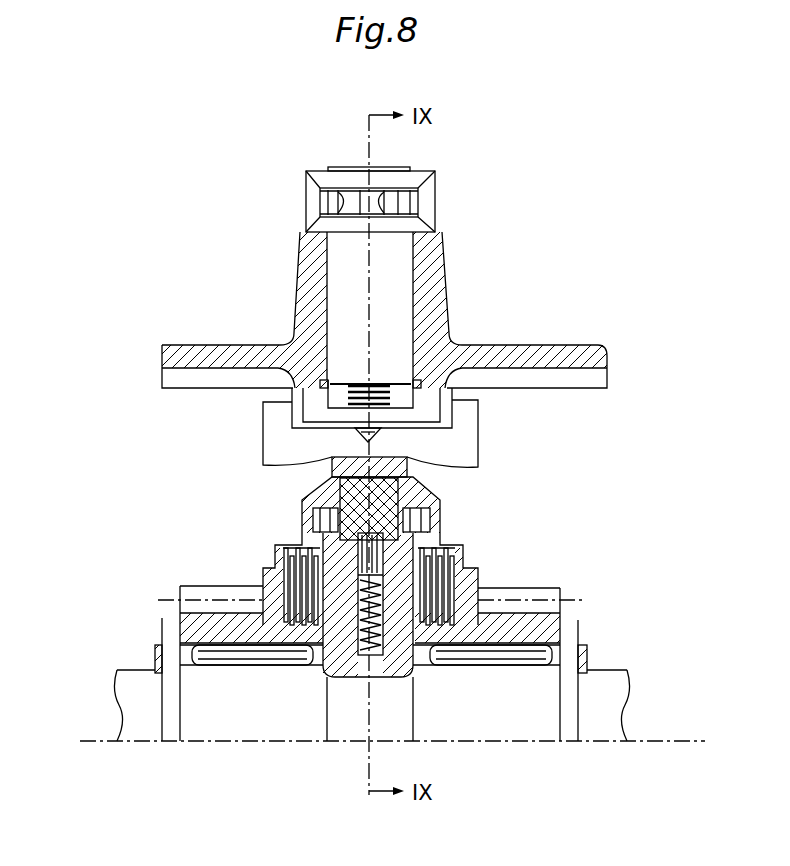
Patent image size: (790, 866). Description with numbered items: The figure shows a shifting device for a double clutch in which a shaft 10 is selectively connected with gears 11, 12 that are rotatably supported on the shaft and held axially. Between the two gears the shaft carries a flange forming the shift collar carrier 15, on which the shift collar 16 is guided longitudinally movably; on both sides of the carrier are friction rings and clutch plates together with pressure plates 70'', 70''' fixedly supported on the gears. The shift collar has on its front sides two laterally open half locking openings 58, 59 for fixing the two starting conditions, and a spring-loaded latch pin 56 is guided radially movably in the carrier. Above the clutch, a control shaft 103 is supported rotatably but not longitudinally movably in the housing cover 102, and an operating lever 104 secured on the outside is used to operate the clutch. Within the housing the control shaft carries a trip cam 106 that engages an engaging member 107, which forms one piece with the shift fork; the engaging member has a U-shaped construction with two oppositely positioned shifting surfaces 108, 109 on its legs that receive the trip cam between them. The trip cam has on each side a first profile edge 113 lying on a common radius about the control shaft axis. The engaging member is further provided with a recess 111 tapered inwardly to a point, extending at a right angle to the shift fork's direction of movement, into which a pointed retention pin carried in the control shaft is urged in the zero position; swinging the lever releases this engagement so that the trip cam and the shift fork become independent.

The operating lever 104 is at (418, 187).
The control shaft 103 is at (387, 297).
The first profile edge 113 is at (387, 392).
The housing cover 102 is at (582, 363).
The trip cam 106 is at (322, 395).
The shifting surface 108 is at (293, 407).
The engaging member 107 is at (283, 440).
The shifting surface 109 is at (449, 412).
The recess 111 is at (390, 437).
The locking opening 58 is at (350, 526).
The shift collar 16 is at (413, 493).
The locking opening 59 is at (362, 526).
The pressure plate 70'' is at (194, 570).
The pressure plate 70''' is at (550, 579).
The gear 12 is at (200, 597).
The gear 11 is at (542, 597).
The shaft 10 is at (613, 707).
The shift collar carrier 15 is at (402, 718).
The latch pin 56 is at (312, 663).